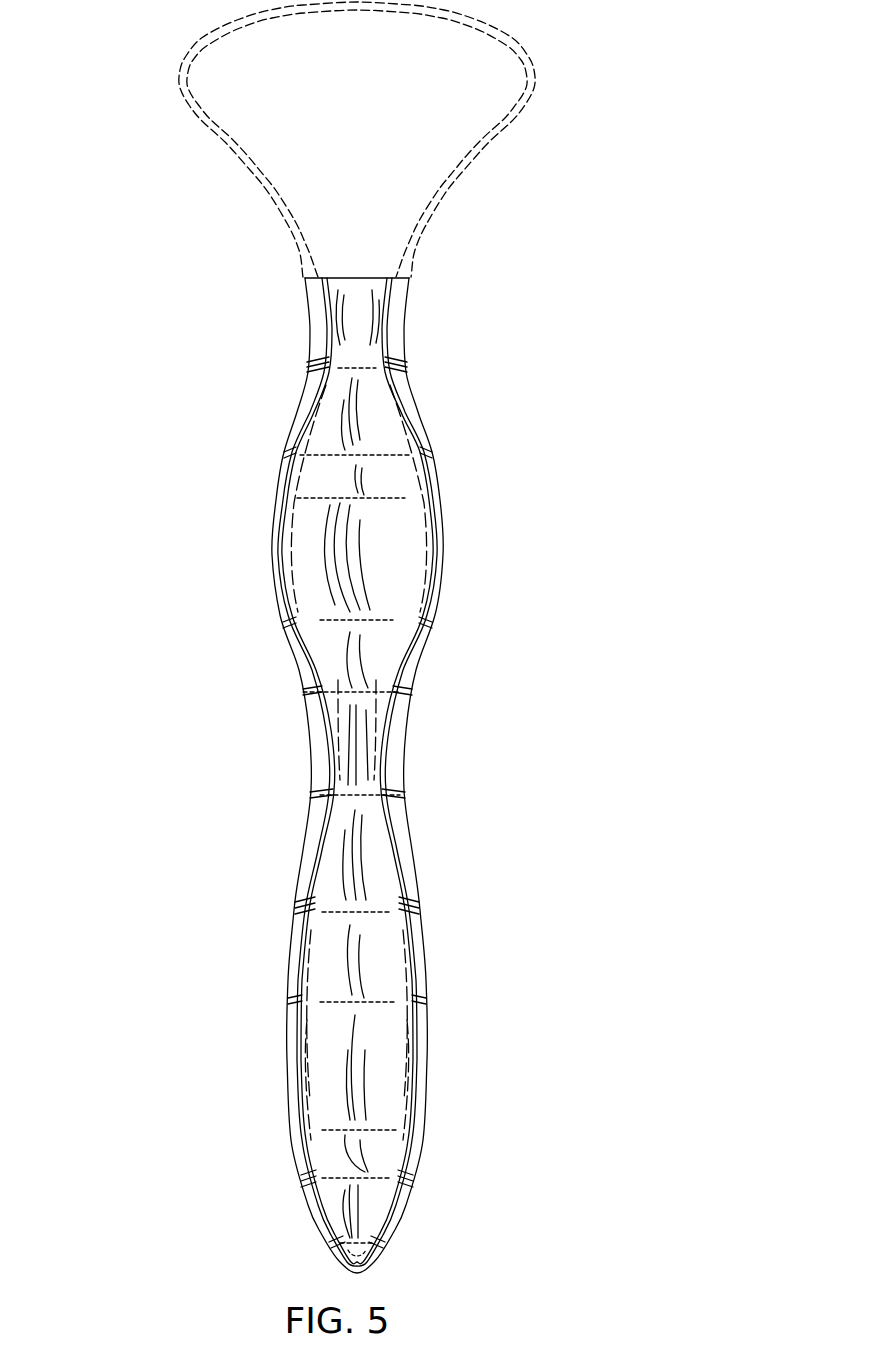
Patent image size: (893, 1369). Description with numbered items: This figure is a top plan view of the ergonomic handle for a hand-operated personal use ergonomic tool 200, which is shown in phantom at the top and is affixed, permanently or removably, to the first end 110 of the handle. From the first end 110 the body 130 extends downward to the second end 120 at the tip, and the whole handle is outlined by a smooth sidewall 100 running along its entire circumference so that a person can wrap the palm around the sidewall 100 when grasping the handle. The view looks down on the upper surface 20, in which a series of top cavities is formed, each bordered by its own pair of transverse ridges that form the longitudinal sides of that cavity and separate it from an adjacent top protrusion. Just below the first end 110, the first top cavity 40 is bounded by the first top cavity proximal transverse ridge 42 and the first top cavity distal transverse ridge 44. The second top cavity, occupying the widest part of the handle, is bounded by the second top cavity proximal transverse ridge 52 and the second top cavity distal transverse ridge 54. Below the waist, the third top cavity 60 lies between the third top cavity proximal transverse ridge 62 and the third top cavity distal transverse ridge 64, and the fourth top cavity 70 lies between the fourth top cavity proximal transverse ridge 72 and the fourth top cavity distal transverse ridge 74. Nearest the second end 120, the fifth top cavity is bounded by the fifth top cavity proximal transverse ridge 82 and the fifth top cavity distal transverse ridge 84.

The hand-operated personal use ergonomic tool 200 is at (389, 140).
The body 130 is at (182, 1120).
The smooth sidewall 100 is at (443, 556).
The first end 110 is at (409, 279).
The first top cavity proximal transverse ridge 42 is at (385, 305).
The first top cavity 40 is at (372, 427).
The first top cavity distal transverse ridge 44 is at (433, 463).
The second top cavity proximal transverse ridge 52 is at (275, 490).
The upper surface 20 is at (412, 521).
The second top cavity distal transverse ridge 54 is at (287, 628).
The third top cavity proximal transverse ridge 62 is at (411, 692).
The third top cavity 60 is at (372, 757).
The third top cavity distal transverse ridge 64 is at (408, 798).
The fourth top cavity proximal transverse ridge 72 is at (296, 906).
The fourth top cavity 70 is at (311, 960).
The fourth top cavity distal transverse ridge 74 is at (293, 1000).
The fifth top cavity proximal transverse ridge 82 is at (388, 1117).
The fifth top cavity distal transverse ridge 84 is at (407, 1228).
The second end 120 is at (368, 1275).